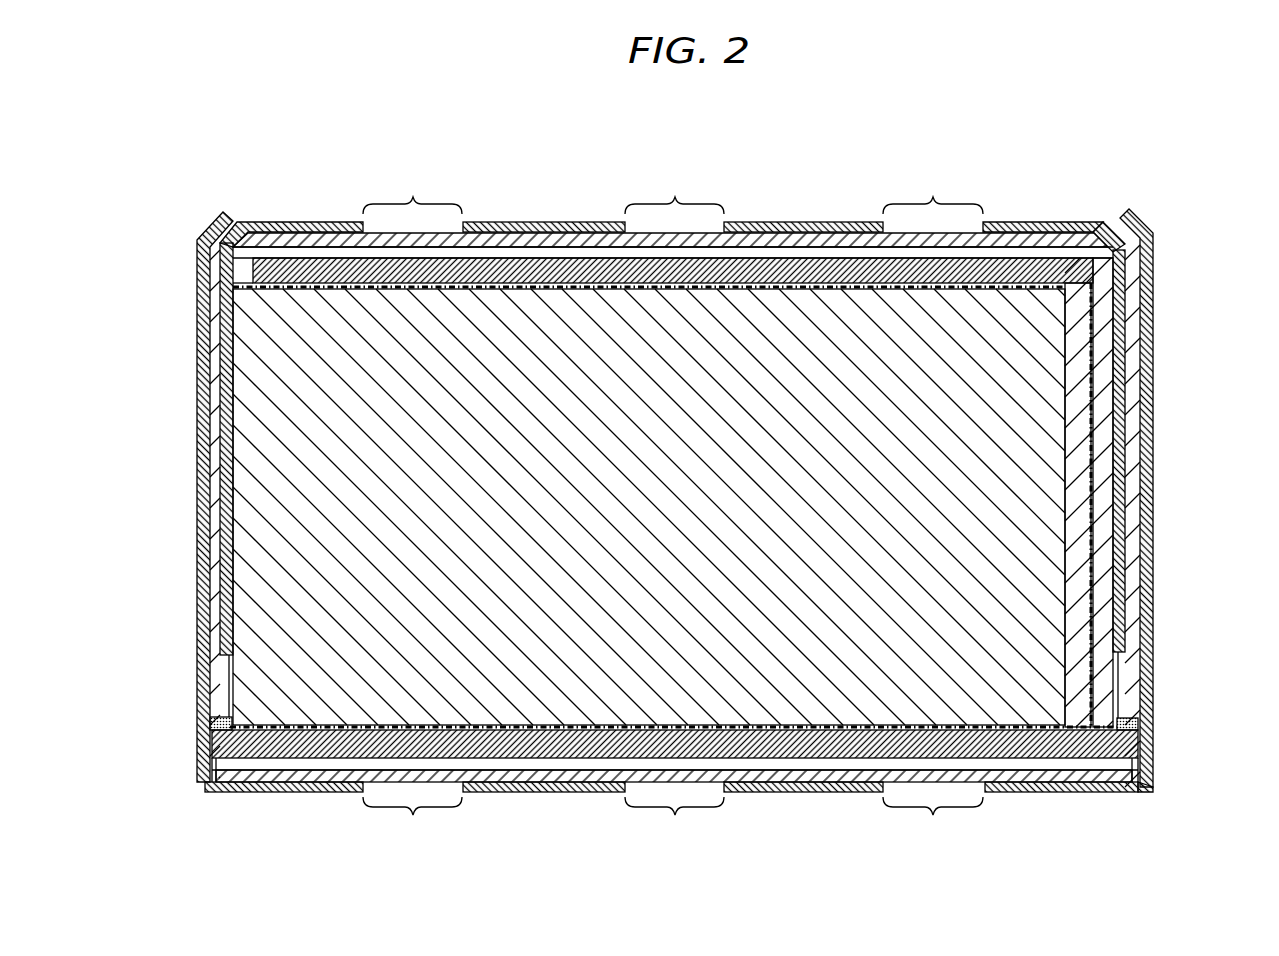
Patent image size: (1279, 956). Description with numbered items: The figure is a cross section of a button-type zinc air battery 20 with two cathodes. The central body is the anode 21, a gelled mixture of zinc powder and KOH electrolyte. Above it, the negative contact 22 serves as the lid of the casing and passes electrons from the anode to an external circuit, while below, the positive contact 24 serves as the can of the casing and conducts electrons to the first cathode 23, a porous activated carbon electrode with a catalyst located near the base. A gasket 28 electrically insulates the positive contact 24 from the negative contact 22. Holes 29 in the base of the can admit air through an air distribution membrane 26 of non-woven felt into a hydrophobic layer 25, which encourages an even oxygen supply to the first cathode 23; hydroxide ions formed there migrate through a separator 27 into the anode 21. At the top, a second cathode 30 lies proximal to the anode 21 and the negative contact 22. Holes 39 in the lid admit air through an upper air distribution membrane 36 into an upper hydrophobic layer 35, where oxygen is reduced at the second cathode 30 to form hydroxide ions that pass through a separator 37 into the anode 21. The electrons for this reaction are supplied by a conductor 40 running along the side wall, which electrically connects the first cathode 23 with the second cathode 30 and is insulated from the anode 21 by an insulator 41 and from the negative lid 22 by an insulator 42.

The zinc air battery 20 is at (398, 98).
The anode 21 is at (798, 421).
The negative contact 22 is at (1088, 217).
The first cathode 23 is at (565, 748).
The positive contact 24 is at (1125, 792).
The hydrophobic layer 25 is at (522, 762).
The air distribution membrane 26 is at (488, 791).
The separator 27 is at (597, 729).
The gasket 28 is at (1133, 223).
The holes 29 is at (673, 825).
The second cathode 30 is at (542, 268).
The hydrophobic layer 35 is at (511, 255).
The air distribution membrane 36 is at (478, 226).
The separator 37 is at (578, 288).
The holes 39 is at (673, 185).
The conductor 40 is at (1087, 677).
The insulator 41 is at (1075, 615).
The insulator 42 is at (1108, 557).